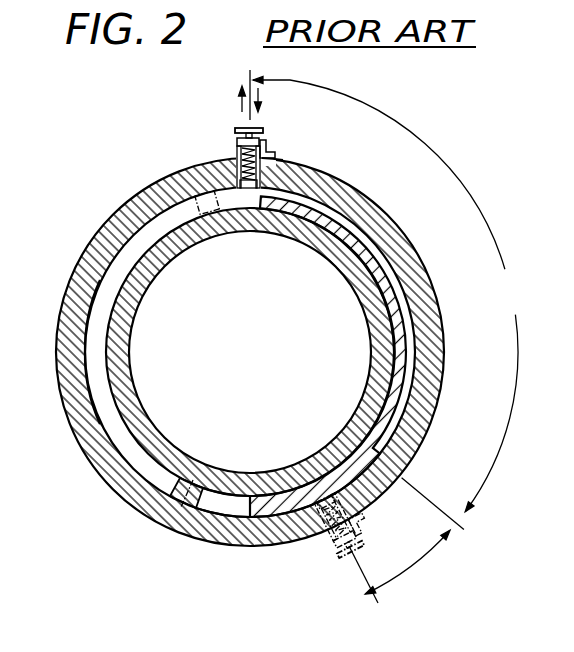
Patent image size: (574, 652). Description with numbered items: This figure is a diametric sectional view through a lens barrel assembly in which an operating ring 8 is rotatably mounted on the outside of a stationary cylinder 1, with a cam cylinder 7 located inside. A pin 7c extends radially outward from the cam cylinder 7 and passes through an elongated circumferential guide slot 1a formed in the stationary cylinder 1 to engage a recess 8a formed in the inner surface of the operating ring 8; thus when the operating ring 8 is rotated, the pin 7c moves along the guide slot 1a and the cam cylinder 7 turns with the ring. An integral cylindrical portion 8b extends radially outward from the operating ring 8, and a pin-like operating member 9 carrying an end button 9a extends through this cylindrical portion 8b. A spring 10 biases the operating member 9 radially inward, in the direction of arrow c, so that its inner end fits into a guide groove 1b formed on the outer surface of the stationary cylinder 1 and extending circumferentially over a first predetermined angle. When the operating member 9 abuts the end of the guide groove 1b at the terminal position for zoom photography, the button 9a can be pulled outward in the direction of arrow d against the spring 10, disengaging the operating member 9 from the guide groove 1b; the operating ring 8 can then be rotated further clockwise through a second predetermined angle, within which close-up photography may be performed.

The stationary cylinder 1 is at (371, 257).
The elongated circumferential guide slot 1a is at (83, 352).
The guide groove 1b is at (402, 322).
The cam cylinder 7 is at (129, 326).
The pin 7c is at (205, 192).
The operating ring 8 is at (78, 246).
The recess 8a is at (184, 508).
The cylindrical portion 8b is at (265, 142).
The operating member 9 is at (238, 141).
The end button 9a is at (248, 128).
The spring 10 is at (284, 161).
The arrow d is at (240, 100).
The arrow c is at (262, 104).